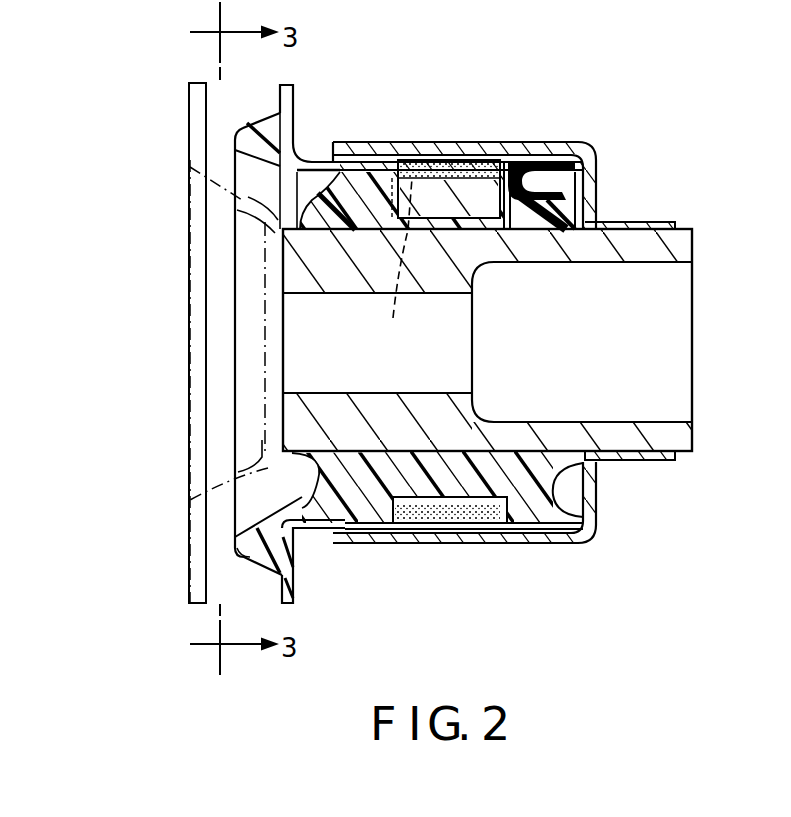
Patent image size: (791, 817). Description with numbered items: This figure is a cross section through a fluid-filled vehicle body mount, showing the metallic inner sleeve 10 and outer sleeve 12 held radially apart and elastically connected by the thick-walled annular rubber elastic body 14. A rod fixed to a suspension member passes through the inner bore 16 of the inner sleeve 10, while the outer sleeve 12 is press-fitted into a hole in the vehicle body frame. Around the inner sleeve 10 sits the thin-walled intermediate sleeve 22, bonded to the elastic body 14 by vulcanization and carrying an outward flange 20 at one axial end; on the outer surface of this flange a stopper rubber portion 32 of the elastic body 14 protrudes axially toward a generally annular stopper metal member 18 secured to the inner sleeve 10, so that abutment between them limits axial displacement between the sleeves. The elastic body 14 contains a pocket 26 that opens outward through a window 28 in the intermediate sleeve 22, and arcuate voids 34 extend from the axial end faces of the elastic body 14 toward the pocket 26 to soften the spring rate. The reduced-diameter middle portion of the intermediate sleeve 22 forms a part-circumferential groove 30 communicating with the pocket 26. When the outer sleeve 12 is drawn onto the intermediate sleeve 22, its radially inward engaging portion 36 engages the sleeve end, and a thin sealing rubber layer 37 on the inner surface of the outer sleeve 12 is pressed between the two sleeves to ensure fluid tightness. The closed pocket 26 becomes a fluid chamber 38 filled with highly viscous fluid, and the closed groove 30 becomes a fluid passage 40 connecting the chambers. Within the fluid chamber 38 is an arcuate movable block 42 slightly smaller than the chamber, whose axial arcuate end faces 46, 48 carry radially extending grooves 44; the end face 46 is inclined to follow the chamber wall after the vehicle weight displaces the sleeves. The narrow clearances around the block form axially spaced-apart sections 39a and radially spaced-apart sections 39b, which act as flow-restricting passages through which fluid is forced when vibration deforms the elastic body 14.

The inner sleeve 10 is at (598, 229).
The outer sleeve 12 is at (533, 545).
The elastic body 14 is at (372, 480).
The inner bore 16 is at (303, 292).
The stopper metal member 18 is at (176, 105).
The outward flange 20 is at (288, 123).
The intermediate sleeve 22 is at (313, 545).
The pocket 26 is at (495, 163).
The window 28 is at (405, 160).
The part-circumferential groove 30 is at (480, 525).
The stopper rubber portion 32 is at (253, 556).
The arcuate void 34 is at (355, 182).
The engaging portion 36 is at (597, 522).
The sealing rubber layer 37 is at (553, 158).
The fluid chamber 38 is at (488, 170).
The axially spaced-apart section 39a is at (400, 216).
The radially spaced-apart section 39b is at (421, 168).
The fluid passage 40 is at (430, 515).
The movable block 42 is at (446, 170).
The groove 44 is at (550, 277).
The arcuate end face 46 is at (548, 218).
The arcuate end face 48 is at (398, 200).